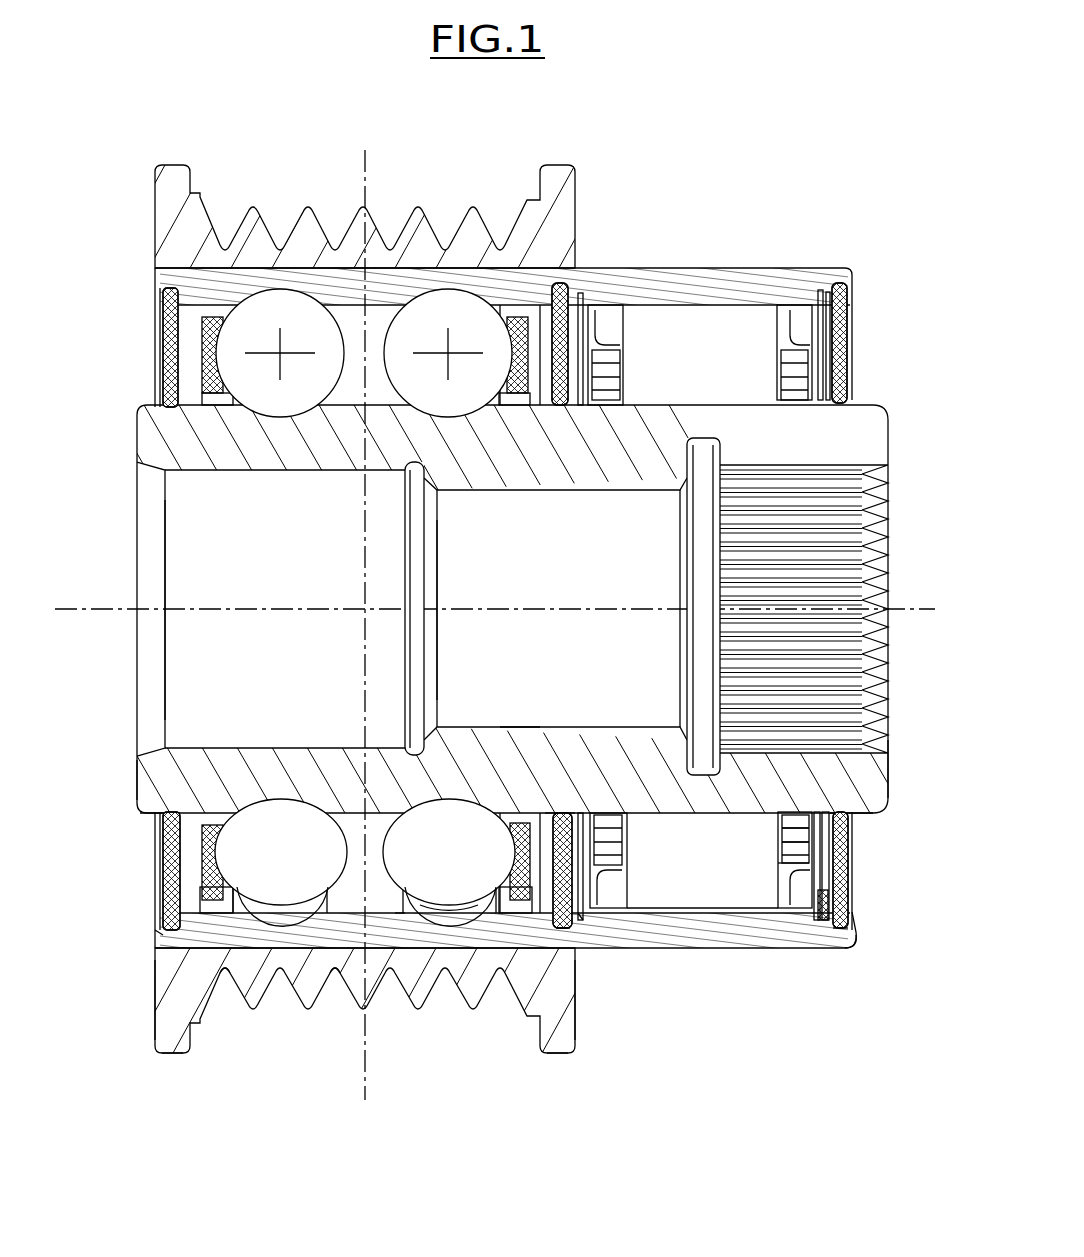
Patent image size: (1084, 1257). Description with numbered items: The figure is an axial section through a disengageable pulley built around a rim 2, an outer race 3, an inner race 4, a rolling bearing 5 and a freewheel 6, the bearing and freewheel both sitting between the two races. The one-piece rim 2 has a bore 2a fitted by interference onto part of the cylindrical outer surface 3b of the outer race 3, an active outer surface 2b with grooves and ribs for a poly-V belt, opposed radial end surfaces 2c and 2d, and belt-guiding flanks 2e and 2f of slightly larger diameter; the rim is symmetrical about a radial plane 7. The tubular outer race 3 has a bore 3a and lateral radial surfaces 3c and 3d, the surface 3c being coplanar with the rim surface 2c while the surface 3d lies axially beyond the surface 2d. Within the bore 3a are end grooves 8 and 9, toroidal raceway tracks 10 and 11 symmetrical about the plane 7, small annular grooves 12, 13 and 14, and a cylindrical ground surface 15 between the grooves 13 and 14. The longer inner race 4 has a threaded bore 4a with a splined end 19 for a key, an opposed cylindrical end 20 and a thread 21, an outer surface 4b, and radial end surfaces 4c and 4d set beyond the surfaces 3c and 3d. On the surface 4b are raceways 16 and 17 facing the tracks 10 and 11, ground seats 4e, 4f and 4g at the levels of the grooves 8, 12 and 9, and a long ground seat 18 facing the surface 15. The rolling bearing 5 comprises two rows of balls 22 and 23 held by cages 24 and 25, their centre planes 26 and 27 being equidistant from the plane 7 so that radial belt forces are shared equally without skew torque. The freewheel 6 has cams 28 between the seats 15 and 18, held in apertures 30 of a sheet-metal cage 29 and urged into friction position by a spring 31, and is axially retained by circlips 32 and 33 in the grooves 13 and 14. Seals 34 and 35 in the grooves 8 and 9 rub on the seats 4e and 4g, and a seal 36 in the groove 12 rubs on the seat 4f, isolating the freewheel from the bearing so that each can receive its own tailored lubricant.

The rim 2 is at (226, 938).
The bore 2a is at (232, 930).
The active outer surface 2b is at (333, 995).
The radial end surface 2c is at (155, 1000).
The radial end surface 2d is at (576, 1020).
The flank 2e is at (178, 1054).
The flank 2f is at (558, 1054).
The outer race 3 is at (336, 939).
The bore 3a is at (400, 925).
The cylindrical outer surface 3b is at (857, 944).
The lateral radial surface 3c is at (165, 933).
The lateral radial surface 3d is at (853, 925).
The inner race 4 is at (513, 783).
The bore 4a is at (520, 727).
The outer surface 4b is at (350, 812).
The radial end surface 4c is at (137, 778).
The radial end surface 4d is at (888, 770).
The ground seat 4e is at (165, 818).
The ground seat 4f is at (560, 812).
The ground seat 4g is at (848, 815).
The rolling bearing 5 is at (228, 903).
The freewheel 6 is at (620, 900).
The radial plane 7 is at (367, 1062).
The groove 8 is at (163, 908).
The groove 9 is at (848, 915).
The raceway track 10 is at (277, 915).
The raceway track 11 is at (448, 915).
The annular groove 12 is at (556, 926).
The annular groove 13 is at (590, 913).
The annular groove 14 is at (850, 935).
The cylindrical ground surface 15 is at (716, 908).
The raceway 16 is at (281, 800).
The raceway 17 is at (462, 800).
The ground seat 18 is at (645, 815).
The splined end 19 is at (862, 602).
The cylindrical end 20 is at (268, 574).
The thread 21 is at (517, 542).
The rolling elements 22 is at (298, 389).
The rolling elements 23 is at (467, 389).
The cage 24 is at (223, 343).
The cage 25 is at (514, 343).
The radial plane 26 is at (280, 390).
The radial plane 27 is at (448, 390).
The lock-up elements 28 is at (689, 871).
The cage 29 is at (790, 862).
The apertures 30 is at (800, 856).
The spring 31 is at (805, 836).
The circlip 32 is at (580, 815).
The circlip 33 is at (840, 862).
The seal 34 is at (163, 322).
The seal 35 is at (848, 330).
The seal 36 is at (566, 284).